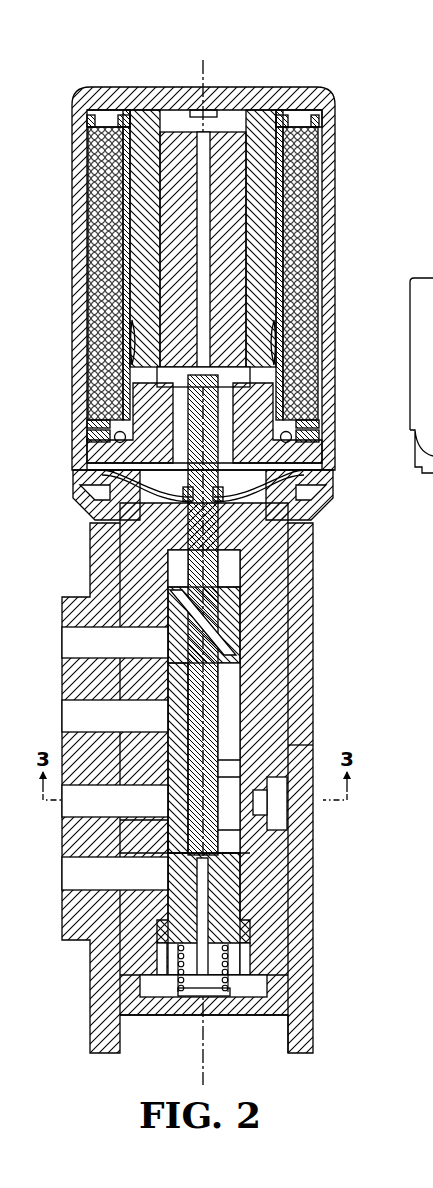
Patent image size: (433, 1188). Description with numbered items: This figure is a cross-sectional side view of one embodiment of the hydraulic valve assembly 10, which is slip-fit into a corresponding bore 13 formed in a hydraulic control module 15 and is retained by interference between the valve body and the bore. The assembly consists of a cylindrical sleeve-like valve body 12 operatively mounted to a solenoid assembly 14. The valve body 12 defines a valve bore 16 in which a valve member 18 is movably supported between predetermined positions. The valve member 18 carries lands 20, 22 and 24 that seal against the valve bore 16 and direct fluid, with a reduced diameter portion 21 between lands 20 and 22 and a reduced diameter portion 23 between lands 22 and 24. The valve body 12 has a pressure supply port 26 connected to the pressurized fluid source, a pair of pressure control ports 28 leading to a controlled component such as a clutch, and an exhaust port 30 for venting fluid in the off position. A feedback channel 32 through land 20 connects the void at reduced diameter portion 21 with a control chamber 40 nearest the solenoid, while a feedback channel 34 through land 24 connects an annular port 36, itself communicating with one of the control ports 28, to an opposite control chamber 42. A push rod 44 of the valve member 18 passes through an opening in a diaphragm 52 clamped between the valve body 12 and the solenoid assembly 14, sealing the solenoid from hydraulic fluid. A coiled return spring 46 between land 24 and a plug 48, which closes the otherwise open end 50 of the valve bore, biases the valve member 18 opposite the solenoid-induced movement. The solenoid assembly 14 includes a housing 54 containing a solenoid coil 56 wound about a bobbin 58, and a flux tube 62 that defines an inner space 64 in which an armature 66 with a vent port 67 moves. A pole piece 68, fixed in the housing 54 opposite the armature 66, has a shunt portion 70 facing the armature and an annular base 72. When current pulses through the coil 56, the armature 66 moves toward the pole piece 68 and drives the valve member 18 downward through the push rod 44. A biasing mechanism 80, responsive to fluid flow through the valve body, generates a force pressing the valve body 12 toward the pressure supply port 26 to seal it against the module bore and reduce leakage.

The hydraulic valve assembly 10 is at (297, 69).
The valve body 12 is at (292, 616).
The bore 13 is at (283, 752).
The solenoid assembly 14 is at (66, 138).
The hydraulic control module 15 is at (97, 570).
The valve bore 16 is at (248, 870).
The valve member 18 is at (242, 581).
The land 20 is at (167, 615).
The reduced diameter portion 21 is at (222, 692).
The land 22 is at (240, 760).
The reduced diameter portion 23 is at (183, 833).
The land 24 is at (178, 907).
The pressure supply port 26 is at (73, 800).
The pressure control port 28 is at (73, 707).
The exhaust port 30 is at (85, 632).
The feedback channel 32 is at (242, 600).
The feedback channel 34 is at (233, 942).
The annular port 36 is at (208, 922).
The control chamber 40 is at (173, 552).
The control chamber 42 is at (242, 957).
The push rod 44 is at (217, 427).
The return spring 46 is at (175, 947).
The plug 48 is at (163, 1015).
The open end 50 is at (248, 997).
The diaphragm 52 is at (102, 467).
The housing 54 is at (330, 156).
The solenoid coil 56 is at (243, 233).
The bobbin 58 is at (120, 195).
The flux tube 62 is at (123, 253).
The inner space 64 is at (242, 242).
The armature 66 is at (231, 140).
The vent port 67 is at (183, 140).
The pole piece 68 is at (148, 395).
The shunt portion 70 is at (260, 377).
The annular base 72 is at (305, 442).
The biasing mechanism 80 is at (273, 800).